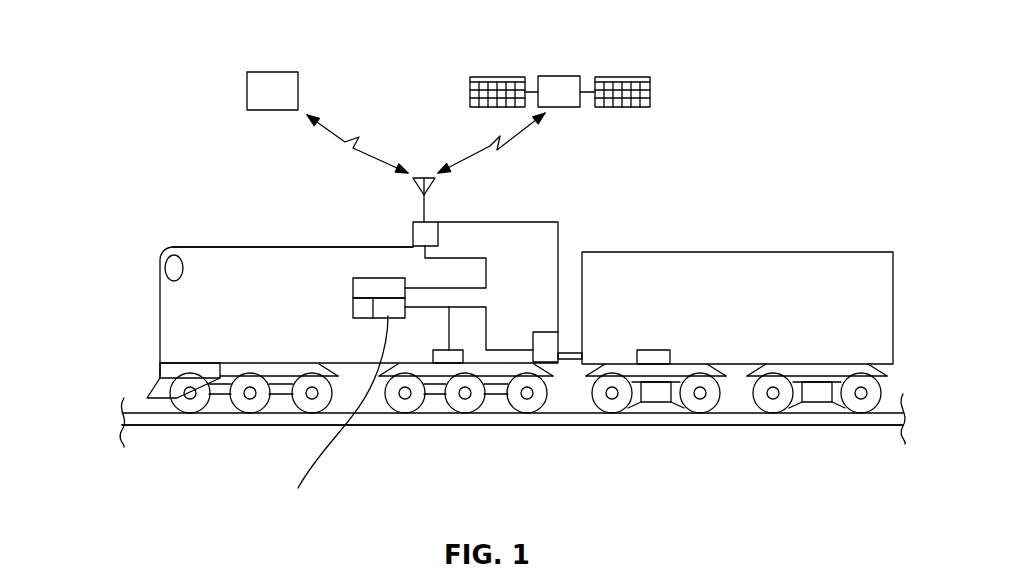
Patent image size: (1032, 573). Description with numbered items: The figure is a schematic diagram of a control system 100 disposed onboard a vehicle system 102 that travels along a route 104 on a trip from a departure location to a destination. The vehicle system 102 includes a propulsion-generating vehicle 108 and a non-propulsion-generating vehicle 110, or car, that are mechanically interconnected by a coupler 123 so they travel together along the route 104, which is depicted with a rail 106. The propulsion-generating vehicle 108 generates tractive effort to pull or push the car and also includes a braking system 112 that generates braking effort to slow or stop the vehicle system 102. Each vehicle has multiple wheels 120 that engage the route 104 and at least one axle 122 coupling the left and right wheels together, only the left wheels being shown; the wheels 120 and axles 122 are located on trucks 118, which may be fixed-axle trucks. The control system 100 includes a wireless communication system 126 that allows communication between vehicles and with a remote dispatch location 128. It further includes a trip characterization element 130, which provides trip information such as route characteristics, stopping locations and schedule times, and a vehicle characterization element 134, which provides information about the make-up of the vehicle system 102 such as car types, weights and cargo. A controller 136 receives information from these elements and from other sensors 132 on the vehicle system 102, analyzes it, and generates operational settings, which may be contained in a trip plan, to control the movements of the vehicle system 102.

The control system 100 is at (299, 196).
The vehicle system 102 is at (590, 234).
The route 104 is at (162, 437).
The rail 106 is at (273, 425).
The propulsion-generating vehicle 108 is at (270, 247).
The non-propulsion-generating vehicle 110 is at (768, 320).
The braking system 112 is at (443, 363).
The truck 118 is at (680, 376).
The wheel 120 is at (391, 407).
The axle 122 is at (405, 399).
The coupler 123 is at (573, 358).
The wireless communication system 126 is at (413, 232).
The remote (dispatch) location 128 is at (273, 72).
The trip characterization element 130 is at (353, 308).
The sensors 132 is at (553, 362).
The vehicle characterization element 134 is at (333, 417).
The controller 136 is at (353, 283).